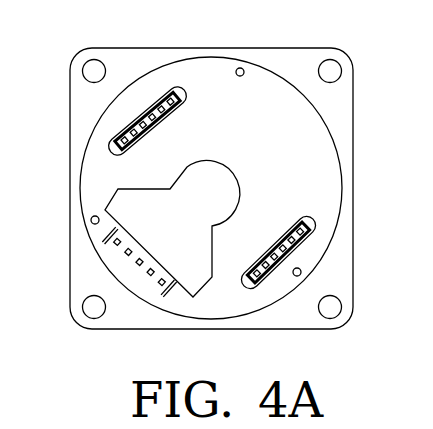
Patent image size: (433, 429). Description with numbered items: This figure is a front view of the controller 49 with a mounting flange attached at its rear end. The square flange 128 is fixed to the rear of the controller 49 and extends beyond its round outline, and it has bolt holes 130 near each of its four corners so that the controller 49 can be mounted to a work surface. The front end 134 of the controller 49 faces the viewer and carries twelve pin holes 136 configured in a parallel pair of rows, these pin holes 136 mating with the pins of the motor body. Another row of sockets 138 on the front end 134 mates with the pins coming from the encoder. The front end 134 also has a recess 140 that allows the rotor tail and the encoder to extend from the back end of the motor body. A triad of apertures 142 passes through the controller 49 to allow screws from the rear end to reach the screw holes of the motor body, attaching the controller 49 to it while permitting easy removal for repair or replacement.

The square flange 128 is at (120, 30).
The controller 49 is at (178, 68).
The bolt holes 130 is at (82, 71).
The triad of apertures 142 is at (240, 68).
The front end 134 is at (293, 131).
The pin holes 136 is at (126, 142).
The recess 140 is at (116, 197).
The row of sockets 138 is at (137, 263).